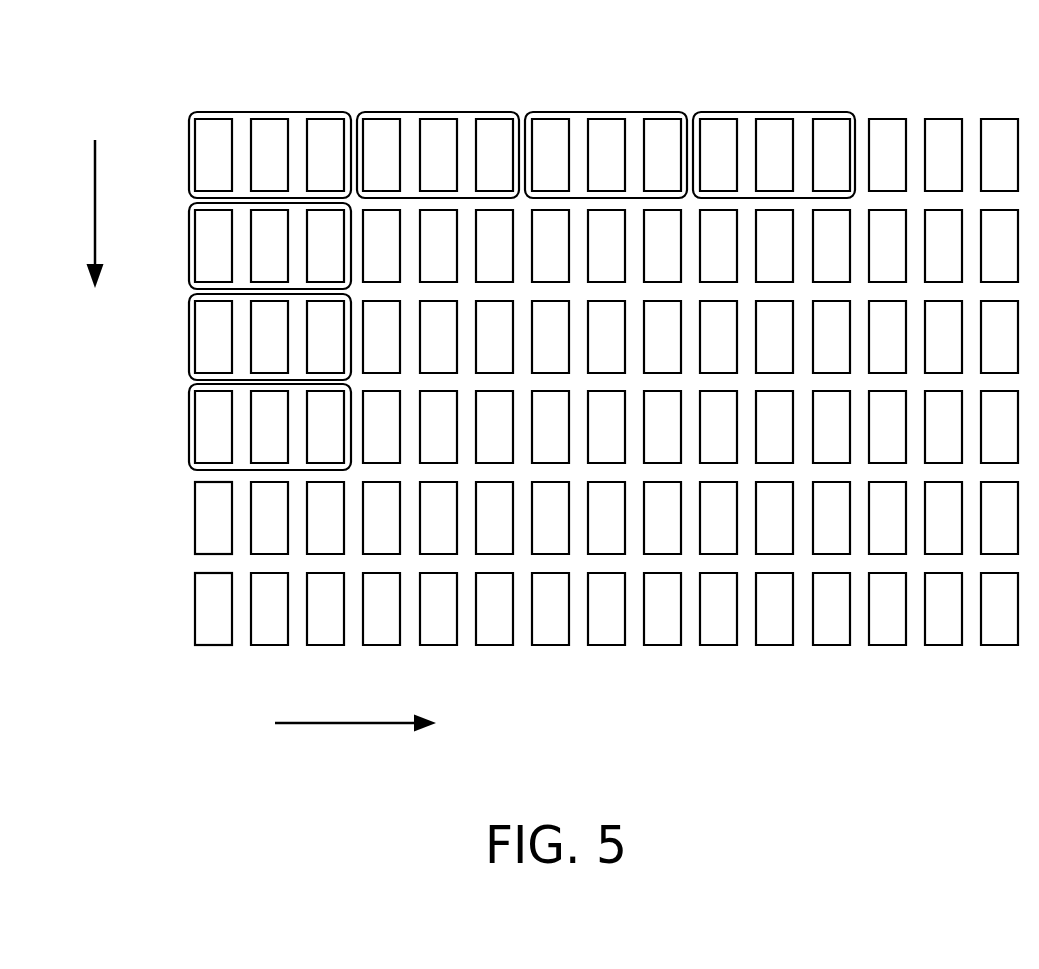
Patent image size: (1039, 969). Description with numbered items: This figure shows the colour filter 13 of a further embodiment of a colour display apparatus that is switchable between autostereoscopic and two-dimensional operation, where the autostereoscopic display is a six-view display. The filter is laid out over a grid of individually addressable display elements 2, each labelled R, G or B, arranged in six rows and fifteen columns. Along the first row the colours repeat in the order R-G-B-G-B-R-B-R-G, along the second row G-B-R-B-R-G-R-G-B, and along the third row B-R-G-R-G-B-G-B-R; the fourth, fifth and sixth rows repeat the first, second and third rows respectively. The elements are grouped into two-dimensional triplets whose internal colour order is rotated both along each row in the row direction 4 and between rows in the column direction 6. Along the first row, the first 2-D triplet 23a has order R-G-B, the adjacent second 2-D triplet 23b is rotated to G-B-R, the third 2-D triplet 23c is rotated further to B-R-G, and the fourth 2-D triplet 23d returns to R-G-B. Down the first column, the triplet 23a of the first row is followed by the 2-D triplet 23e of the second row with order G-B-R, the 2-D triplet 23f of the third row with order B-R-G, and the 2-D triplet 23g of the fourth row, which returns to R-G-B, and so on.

The individually addressable display element 2 is at (195, 457).
The row direction 4 is at (347, 724).
The column direction 6 is at (95, 204).
The colour filter 13 is at (181, 682).
The first 2-D triplet 23a is at (270, 112).
The second 2-D triplet 23b is at (438, 112).
The third 2-D triplet 23c is at (606, 112).
The fourth 2-D triplet 23d is at (774, 112).
The 2-D triplet of the second row 23e is at (189, 247).
The 2-D triplet of the third row 23f is at (189, 338).
The 2-D triplet of the fourth row 23g is at (189, 416).